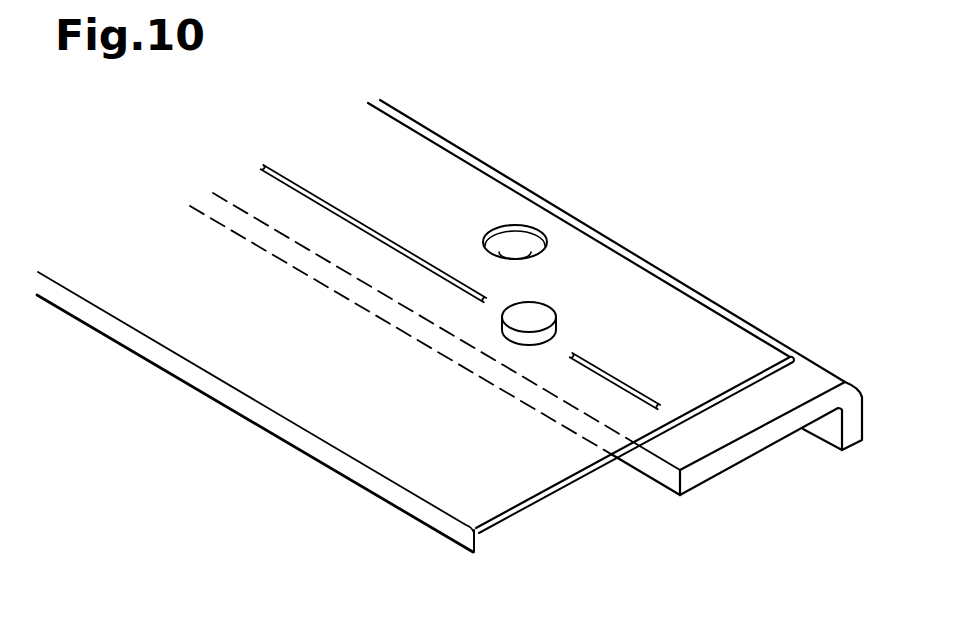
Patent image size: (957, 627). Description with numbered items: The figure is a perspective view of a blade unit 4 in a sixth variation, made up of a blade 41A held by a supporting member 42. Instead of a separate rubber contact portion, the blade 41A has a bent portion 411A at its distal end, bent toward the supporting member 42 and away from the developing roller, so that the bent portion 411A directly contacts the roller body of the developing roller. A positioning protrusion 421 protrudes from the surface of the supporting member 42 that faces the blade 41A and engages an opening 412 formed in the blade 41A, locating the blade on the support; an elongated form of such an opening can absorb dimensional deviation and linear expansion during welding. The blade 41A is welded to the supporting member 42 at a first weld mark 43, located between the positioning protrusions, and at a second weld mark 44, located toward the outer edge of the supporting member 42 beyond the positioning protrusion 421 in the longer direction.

The blade unit 4 is at (722, 172).
The blade 41A is at (502, 200).
The bent portion 411A is at (367, 465).
The opening 412 is at (545, 333).
The supporting member 42 is at (737, 453).
The positioning protrusion 421 is at (532, 313).
The first weld mark 43 is at (380, 235).
The second weld mark 44 is at (645, 390).